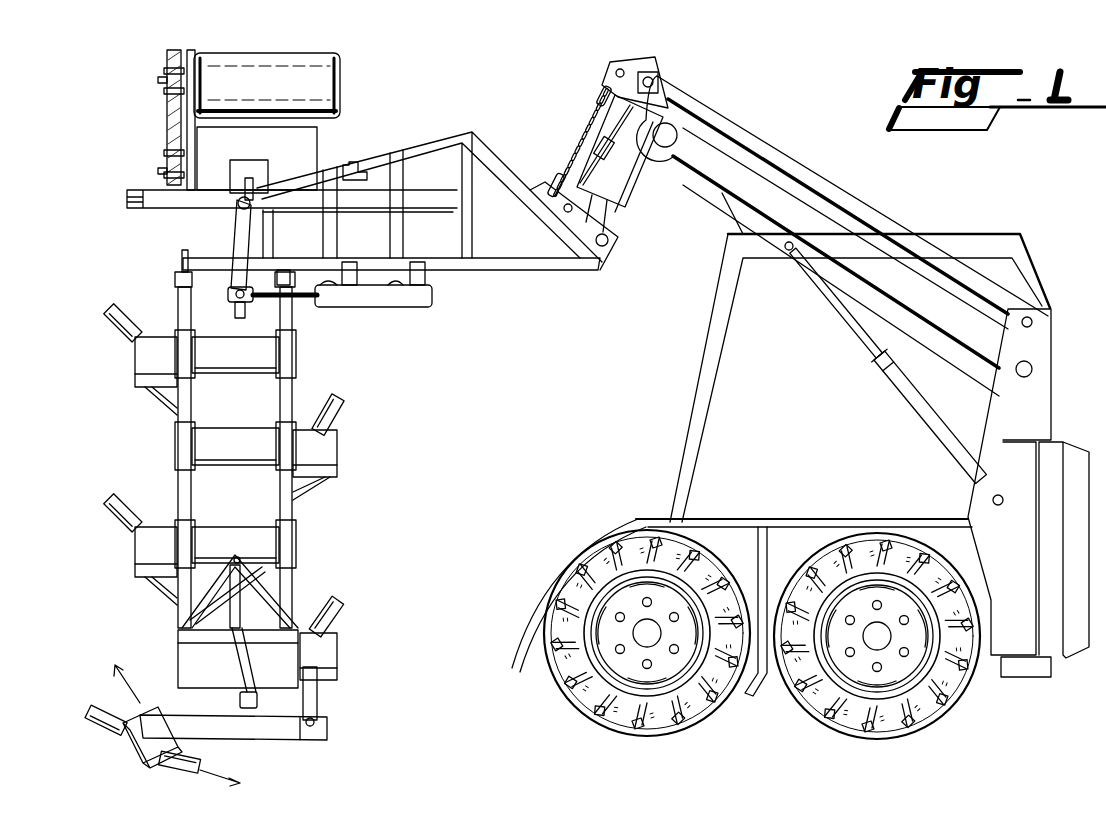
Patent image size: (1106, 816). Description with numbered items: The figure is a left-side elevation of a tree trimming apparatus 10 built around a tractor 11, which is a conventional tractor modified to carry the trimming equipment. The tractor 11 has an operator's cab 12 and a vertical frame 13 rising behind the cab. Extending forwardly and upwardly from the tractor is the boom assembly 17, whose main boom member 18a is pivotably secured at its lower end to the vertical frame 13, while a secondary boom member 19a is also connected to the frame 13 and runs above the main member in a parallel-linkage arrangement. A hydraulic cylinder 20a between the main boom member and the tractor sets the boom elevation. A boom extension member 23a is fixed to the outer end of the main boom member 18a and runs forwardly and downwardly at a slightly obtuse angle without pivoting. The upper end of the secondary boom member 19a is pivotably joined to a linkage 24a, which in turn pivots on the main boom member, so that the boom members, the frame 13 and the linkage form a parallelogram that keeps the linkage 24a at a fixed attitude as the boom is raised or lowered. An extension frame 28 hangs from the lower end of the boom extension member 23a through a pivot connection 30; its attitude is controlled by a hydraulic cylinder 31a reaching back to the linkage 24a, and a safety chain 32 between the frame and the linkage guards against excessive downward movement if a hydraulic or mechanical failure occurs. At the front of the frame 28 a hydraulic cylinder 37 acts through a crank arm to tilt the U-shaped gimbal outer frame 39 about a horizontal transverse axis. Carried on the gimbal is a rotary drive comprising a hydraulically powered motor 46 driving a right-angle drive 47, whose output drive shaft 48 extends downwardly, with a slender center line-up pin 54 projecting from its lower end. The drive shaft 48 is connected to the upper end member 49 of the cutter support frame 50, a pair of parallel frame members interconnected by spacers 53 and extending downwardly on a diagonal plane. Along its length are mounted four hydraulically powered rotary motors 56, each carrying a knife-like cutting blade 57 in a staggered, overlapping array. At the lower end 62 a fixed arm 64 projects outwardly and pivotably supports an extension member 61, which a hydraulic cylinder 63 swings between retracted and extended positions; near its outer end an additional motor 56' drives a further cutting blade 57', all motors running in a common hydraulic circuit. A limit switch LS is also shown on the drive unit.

The tree trimming apparatus 10 is at (498, 447).
The tractor 11 is at (641, 483).
The operator's cab 12 is at (740, 393).
The vertical frame 13 is at (1040, 395).
The boom assembly 17 is at (794, 111).
The main boom member 18a is at (968, 340).
The secondary boom member 19a is at (833, 192).
The hydraulic cylinder 20a is at (905, 405).
The boom extension member 23a is at (642, 200).
The linkage 24a is at (612, 60).
The extension frame 28 is at (468, 118).
The pivot connection 30 is at (607, 255).
The hydraulic cylinder 31a is at (600, 133).
The safety chain 32 is at (563, 170).
The hydraulic cylinder 37 is at (383, 296).
The gimbal outer frame 39 is at (133, 205).
The hydraulically-powered motor 46 is at (325, 80).
The right-angle drive 47 is at (300, 147).
The output drive shaft 48 is at (232, 222).
The upper end member 49 is at (195, 258).
The cutter support frame 50 is at (119, 444).
The spacer 53 is at (222, 362).
The center line-up pin 54 is at (232, 298).
The hydraulically-powered rotary motor 56 is at (230, 518).
The hydraulically-powered motor 56' is at (166, 725).
The cutting blade 57 is at (224, 478).
The cutting blade 57' is at (126, 739).
The extension member 61 is at (283, 735).
The lower end 62 is at (200, 680).
The hydraulic cylinder 63 is at (178, 628).
The fixed arm 64 is at (320, 700).
The limit switch LS is at (248, 162).